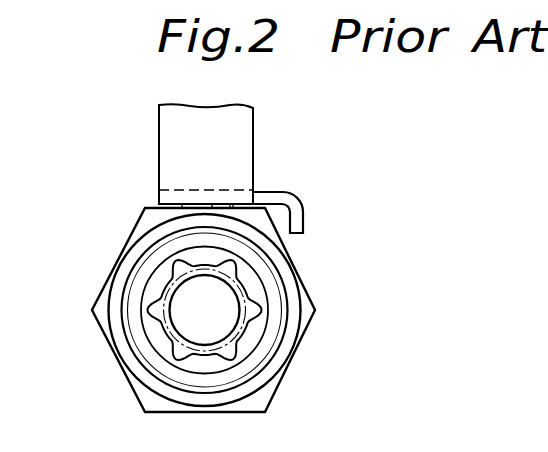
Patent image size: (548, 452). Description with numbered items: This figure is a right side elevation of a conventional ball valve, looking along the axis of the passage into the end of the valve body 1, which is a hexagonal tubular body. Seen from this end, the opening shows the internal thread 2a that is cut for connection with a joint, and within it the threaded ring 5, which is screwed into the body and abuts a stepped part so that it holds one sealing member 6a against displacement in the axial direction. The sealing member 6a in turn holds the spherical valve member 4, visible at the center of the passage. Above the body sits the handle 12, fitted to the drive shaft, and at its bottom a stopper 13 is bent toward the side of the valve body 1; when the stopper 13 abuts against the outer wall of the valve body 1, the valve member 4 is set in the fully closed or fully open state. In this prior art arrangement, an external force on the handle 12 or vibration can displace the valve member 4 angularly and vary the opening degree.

The valve body 1 is at (127, 262).
The internal thread 2a is at (273, 272).
The spherical valve member 4 is at (236, 336).
The threaded ring 5 is at (270, 345).
The sealing member 6a is at (252, 298).
The handle 12 is at (242, 153).
The stopper 13 is at (296, 204).